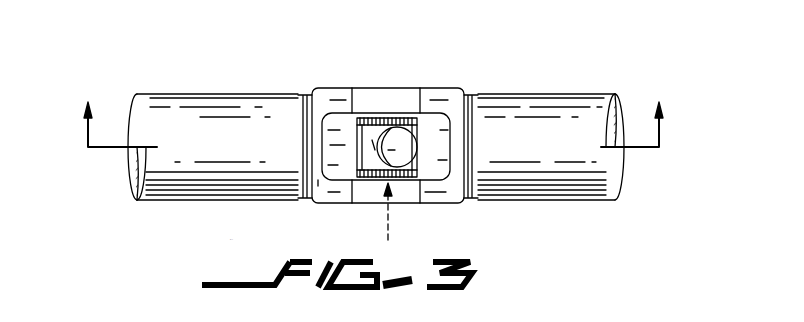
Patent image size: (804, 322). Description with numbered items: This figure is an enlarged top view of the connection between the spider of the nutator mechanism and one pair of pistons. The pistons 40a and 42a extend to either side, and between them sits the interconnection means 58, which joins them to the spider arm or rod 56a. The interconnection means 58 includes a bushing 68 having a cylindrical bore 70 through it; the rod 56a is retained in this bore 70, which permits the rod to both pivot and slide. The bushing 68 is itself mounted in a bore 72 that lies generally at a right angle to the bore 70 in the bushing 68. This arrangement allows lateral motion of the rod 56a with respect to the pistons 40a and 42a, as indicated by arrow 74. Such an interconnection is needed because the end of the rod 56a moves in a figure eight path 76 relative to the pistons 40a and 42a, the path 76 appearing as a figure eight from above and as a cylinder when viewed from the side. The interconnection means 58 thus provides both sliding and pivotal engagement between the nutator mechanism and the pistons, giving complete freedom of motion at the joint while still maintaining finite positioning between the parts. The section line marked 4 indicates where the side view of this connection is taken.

The piston 42a is at (190, 93).
The piston 40a is at (560, 93).
The interconnection means 58 is at (452, 72).
The figure 8 path 76 is at (375, 117).
The spider arm (rod) 56a is at (402, 135).
The bore 72 is at (360, 205).
The cylindrical bore 70 is at (383, 176).
The arrow 74 is at (394, 236).
The bushing 68 is at (413, 208).
The section line 4- 4 is at (376, 124).